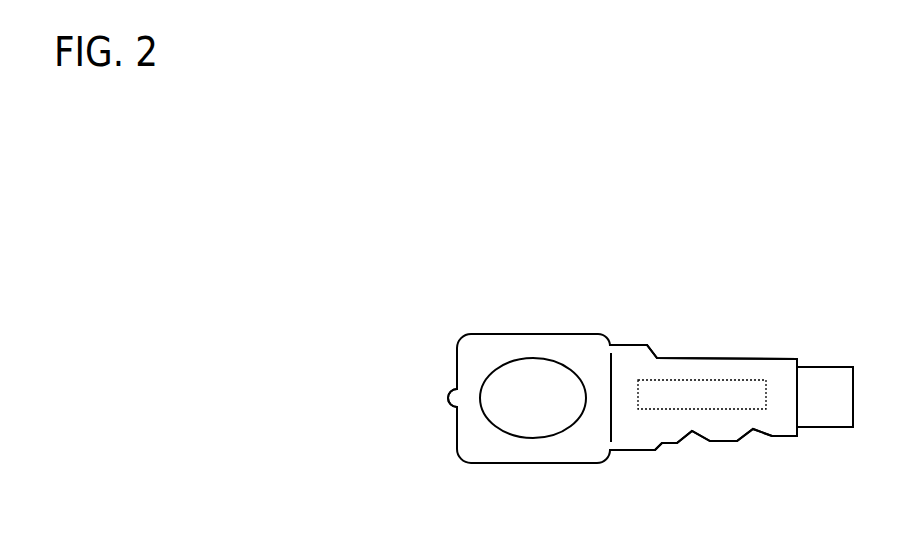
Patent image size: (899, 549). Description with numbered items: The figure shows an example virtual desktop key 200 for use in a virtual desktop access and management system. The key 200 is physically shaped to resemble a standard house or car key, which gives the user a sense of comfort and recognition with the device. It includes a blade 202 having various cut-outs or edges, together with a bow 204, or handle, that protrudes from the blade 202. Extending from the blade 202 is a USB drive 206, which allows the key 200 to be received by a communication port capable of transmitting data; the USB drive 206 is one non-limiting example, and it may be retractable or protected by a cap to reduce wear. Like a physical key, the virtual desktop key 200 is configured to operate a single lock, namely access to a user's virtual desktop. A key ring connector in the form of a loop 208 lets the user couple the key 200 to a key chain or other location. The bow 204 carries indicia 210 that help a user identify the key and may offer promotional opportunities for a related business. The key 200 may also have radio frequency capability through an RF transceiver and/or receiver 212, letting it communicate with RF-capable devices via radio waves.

The virtual desktop key 200 is at (711, 251).
The blade 202 is at (720, 442).
The bow 204 is at (541, 334).
The USB drive 206 is at (809, 407).
The loop 208 is at (450, 410).
The indicia 210 is at (518, 409).
The RF transceiver and/or receiver 212 is at (685, 404).